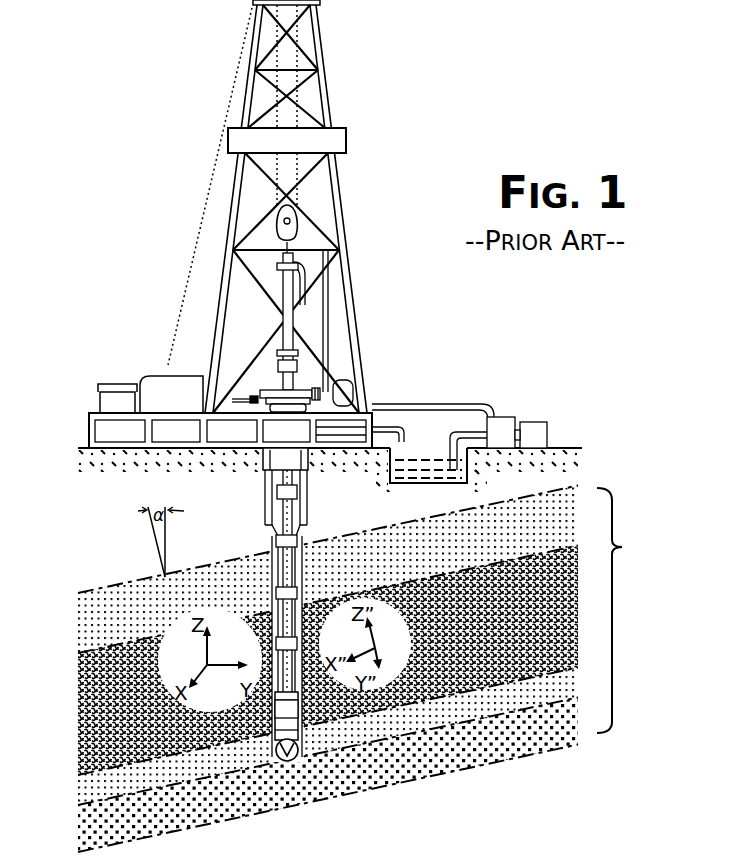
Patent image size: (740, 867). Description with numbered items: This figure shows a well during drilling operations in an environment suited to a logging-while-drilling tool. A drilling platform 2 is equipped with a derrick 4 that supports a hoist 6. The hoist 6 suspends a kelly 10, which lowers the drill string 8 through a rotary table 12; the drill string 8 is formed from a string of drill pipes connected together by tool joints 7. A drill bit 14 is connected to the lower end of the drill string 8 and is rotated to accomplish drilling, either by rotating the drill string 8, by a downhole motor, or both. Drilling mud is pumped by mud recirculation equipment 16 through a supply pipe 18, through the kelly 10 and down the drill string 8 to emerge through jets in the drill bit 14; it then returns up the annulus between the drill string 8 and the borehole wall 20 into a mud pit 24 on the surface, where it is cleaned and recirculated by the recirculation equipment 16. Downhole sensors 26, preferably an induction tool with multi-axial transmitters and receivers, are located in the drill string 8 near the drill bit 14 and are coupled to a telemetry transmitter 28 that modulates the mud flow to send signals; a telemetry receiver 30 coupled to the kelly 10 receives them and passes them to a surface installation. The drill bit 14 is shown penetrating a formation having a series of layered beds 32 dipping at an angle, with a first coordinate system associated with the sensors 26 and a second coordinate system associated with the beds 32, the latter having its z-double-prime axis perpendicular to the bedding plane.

The drilling platform 2 is at (90, 416).
The derrick 4 is at (328, 100).
The hoist 6 is at (294, 219).
The tool joints 7 is at (277, 540).
The drill string 8 is at (273, 553).
The kelly 10 is at (288, 287).
The rotary table 12 is at (302, 391).
The drill bit 14 is at (299, 749).
The mud recirculation equipment 16 is at (498, 420).
The supply pipe 18 is at (440, 405).
The borehole wall 20 is at (302, 549).
The mud pit 24 is at (468, 479).
The downhole sensors 26 is at (280, 720).
The telemetry transmitter 28 is at (291, 704).
The telemetry receiver 30 is at (291, 351).
The layered beds 32 is at (365, 669).